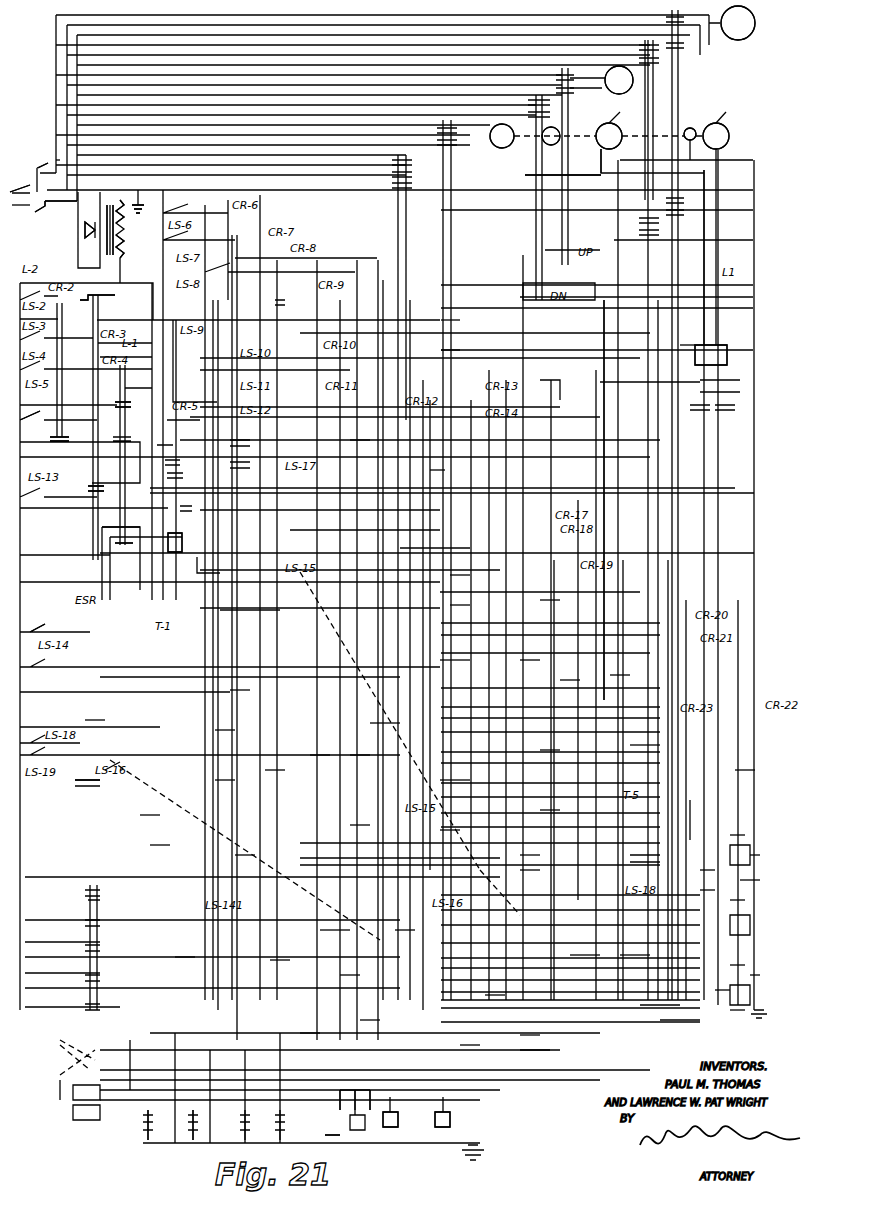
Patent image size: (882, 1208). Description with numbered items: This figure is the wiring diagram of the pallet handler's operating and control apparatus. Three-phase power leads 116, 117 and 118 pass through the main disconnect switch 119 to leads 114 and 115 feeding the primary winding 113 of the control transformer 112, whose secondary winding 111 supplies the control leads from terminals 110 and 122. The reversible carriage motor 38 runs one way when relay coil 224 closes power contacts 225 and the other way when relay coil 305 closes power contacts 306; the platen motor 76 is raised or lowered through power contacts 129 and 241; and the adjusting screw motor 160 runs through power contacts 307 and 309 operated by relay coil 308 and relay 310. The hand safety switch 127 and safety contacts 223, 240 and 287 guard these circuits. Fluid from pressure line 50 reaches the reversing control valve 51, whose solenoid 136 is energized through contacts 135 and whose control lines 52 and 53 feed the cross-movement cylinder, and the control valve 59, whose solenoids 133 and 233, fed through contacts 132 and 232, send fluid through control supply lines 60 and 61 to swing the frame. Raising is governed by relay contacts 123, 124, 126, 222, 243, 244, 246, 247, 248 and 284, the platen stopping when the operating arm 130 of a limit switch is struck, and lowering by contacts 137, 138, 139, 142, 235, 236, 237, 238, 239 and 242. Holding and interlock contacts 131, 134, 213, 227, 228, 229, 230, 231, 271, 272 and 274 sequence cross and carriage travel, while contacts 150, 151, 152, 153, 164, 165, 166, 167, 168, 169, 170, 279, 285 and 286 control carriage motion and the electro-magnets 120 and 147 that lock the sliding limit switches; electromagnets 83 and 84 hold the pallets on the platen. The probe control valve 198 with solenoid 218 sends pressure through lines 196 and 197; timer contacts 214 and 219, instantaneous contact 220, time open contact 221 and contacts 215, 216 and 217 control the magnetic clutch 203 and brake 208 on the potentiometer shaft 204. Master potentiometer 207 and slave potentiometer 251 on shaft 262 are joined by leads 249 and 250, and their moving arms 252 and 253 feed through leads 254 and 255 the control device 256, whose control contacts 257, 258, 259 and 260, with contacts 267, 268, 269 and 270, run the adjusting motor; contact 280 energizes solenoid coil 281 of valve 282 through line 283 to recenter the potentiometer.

The main disconnect switch 119 is at (41, 152).
The power supply lead 118 is at (28, 170).
The power supply lead 117 is at (16, 186).
The power supply lead 116 is at (18, 212).
The lead 115 is at (37, 218).
The lead 114 is at (61, 211).
The primary winding 113 is at (70, 236).
The control transformer 112 is at (101, 216).
The terminal of secondary winding 122 is at (144, 195).
The secondary winding 111 is at (133, 220).
The terminal of secondary winding 110 is at (133, 250).
The CR-3 contact 274 is at (109, 293).
The CR-4 contact 227 is at (96, 399).
The operating arm 130 is at (32, 423).
The CR-10 contact 213 is at (69, 431).
The CR-3 contact 271 is at (82, 473).
The holding contact 229 is at (181, 449).
The CR-5 contacts 134 is at (166, 482).
The CR-5 contacts 131 is at (191, 501).
The CR-4 contact 238 is at (103, 519).
The CR-4 contact 123 is at (121, 557).
The CR-5 contacts 124 is at (166, 552).
The contact 228 is at (262, 294).
The CR-7 contact 248 is at (248, 436).
The CR-10 contact 230 is at (347, 433).
The contact 231 is at (247, 474).
The power contacts 307 is at (392, 196).
The power contacts 309 is at (449, 180).
The relay coil 308 is at (444, 343).
The relay 310 is at (463, 320).
The power contacts 241 is at (520, 97).
The CR-13 contact 242 is at (433, 473).
The CR-17 contact 247 is at (544, 382).
The CR-14 contact 126 is at (435, 548).
The CR-13 contact 237 is at (441, 571).
The CR-12 contact 236 is at (439, 601).
The CR-7 contact 235 is at (262, 614).
The hand safety switch 127 is at (39, 616).
The CR-17 contact 153 is at (541, 590).
The CR-12 contact 272 is at (440, 654).
The CR-17 contact 286 is at (514, 654).
The CR-7 contact 267 is at (267, 684).
The CR-18 contact 268 is at (581, 676).
The CR-19 contact 269 is at (629, 670).
The CR-11 contact 270 is at (399, 716).
The ESR contact 287 is at (73, 716).
The CR-7 contact 282 is at (222, 722).
The CR-9 contact 151 is at (329, 746).
The CR-10 contact 152 is at (377, 746).
The CR-17 contact 283 is at (526, 746).
The CR-8 contact 150 is at (285, 774).
The CR-6 contact 222 is at (222, 774).
The CR-14 contact 285 is at (440, 774).
The ESR contact 223 is at (76, 801).
The time open contact 221 is at (128, 824).
The CR-17 contact 284 is at (534, 806).
The CR-10 contact 246 is at (370, 824).
The CR-12 contact 244 is at (436, 824).
The instantaneous contact 220 is at (136, 854).
The CR-7 contact 243 is at (222, 863).
The CR-17 contact 280 is at (516, 848).
The CR-17 contact 142 is at (516, 868).
The T-5 contact 214 is at (642, 737).
The CR-22 contacts 135 is at (760, 776).
The CR-23 contact 232 is at (703, 819).
The control line 52 is at (719, 827).
The pressure line 50 is at (758, 918).
The reversing control valve 51 is at (764, 854).
The T-5 contact 219 is at (645, 863).
The control line 53 is at (704, 874).
The CR-23 contacts 132 is at (701, 891).
The solenoid 136 is at (763, 878).
The solenoid coil 281 is at (716, 906).
The solenoid 233 is at (716, 969).
The control valve 59 is at (766, 978).
The control supply line 60 is at (709, 988).
The control supply line 61 is at (730, 1014).
The solenoid 133 is at (753, 1026).
The CR-20 contact 215 is at (689, 1029).
The contact 217 is at (658, 995).
The CR-17 contact 216 is at (540, 1058).
The CR-18 contact 165 is at (587, 947).
The CR-19 contact 279 is at (637, 947).
The CR-14 contact 170 is at (505, 987).
The CR-17 contact 169 is at (463, 1032).
The CR-17 contact 168 is at (518, 1027).
The contact 166 is at (295, 1026).
The CR-10 contact 239 is at (377, 1026).
The CR-8 contact 138 is at (260, 975).
The CR-10 contact 167 is at (323, 982).
The contact 137 is at (199, 961).
The CR-9 contact 164 is at (356, 936).
The contact 139 is at (432, 940).
The ESR contact 240 is at (67, 947).
The electro-magnet 147 is at (125, 1129).
The electro-magnet 120 is at (184, 1137).
The electromagnet 84 is at (230, 1125).
The electromagnet 83 is at (291, 1120).
The line 196 is at (326, 1095).
The probe control valve 198 is at (361, 1085).
The line 197 is at (384, 1095).
The solenoid 218 is at (336, 1149).
The magnetic clutch 203 is at (403, 1127).
The brake 208 is at (462, 1125).
The power contacts 225 is at (633, 47).
The electric motor 38 is at (738, 33).
The power contacts 306 is at (685, 48).
The power contacts 129 is at (542, 74).
The motor 76 is at (623, 86).
The moving arm 253 is at (611, 112).
The slave potentiometer 251 is at (627, 132).
The potentiometer 207 is at (706, 111).
The moving arm 252 is at (730, 132).
The adjusting screw motor 160 is at (504, 146).
The shaft 262 is at (565, 146).
The lead 249 is at (618, 159).
The potentiometer shaft 204 is at (688, 144).
The lead 250 is at (580, 182).
The relay coil 305 is at (685, 204).
The relay coil 224 is at (633, 227).
The lead 255 is at (622, 482).
The lead 254 is at (693, 257).
The control contact 257 is at (670, 342).
The control device 256 is at (711, 355).
The control contact 258 is at (740, 379).
The control contact 259 is at (696, 416).
The control contact 260 is at (720, 423).